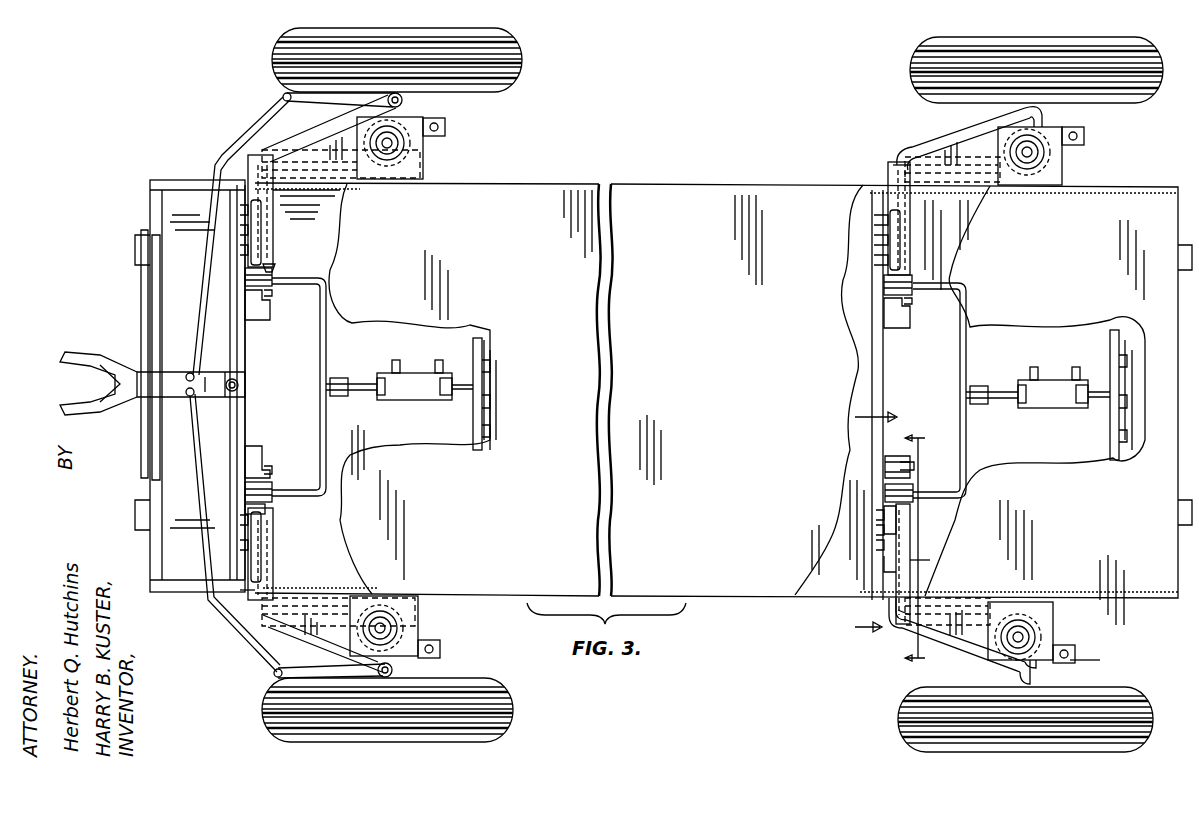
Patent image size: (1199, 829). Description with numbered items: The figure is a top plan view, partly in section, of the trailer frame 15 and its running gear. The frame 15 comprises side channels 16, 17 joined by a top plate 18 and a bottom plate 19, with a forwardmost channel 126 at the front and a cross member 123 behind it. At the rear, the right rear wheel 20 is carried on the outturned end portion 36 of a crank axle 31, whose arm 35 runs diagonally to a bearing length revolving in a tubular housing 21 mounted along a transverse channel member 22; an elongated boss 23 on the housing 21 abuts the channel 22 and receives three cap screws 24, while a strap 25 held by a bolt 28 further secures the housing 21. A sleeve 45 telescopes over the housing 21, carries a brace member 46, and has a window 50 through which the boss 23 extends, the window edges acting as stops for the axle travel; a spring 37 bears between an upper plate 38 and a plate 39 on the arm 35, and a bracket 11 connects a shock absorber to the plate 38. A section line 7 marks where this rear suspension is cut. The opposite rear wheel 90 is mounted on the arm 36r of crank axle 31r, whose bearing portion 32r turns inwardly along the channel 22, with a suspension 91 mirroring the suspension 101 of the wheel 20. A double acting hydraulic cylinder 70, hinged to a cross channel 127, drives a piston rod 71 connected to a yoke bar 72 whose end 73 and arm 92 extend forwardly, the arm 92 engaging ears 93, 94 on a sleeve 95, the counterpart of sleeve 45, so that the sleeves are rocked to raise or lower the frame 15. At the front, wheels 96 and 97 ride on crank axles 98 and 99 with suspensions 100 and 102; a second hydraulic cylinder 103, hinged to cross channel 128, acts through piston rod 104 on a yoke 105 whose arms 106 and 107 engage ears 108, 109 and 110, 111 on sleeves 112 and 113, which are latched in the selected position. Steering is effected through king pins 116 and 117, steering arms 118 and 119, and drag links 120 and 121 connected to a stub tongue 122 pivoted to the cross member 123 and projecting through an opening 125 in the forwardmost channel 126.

The section line 7 is at (924, 548).
The bracket 11 is at (975, 537).
The frame 15 is at (560, 212).
The side channel 16 is at (160, 190).
The side channel 17 is at (172, 580).
The top plate 18 is at (707, 210).
The bottom plate 19 is at (345, 565).
The right rear wheel 20 is at (900, 727).
The tubular housing 21 is at (882, 545).
The transverse channel member 22 is at (882, 368).
The elongated boss 23 is at (884, 520).
The cap screws 24 is at (882, 563).
The strap 25 is at (914, 466).
The bolt 28 is at (885, 462).
The axle 31 is at (890, 630).
The crank axle 31r is at (900, 150).
The bearing portion 32r is at (893, 158).
The arm 35 is at (965, 655).
The outturned end portion 36 is at (1036, 683).
The arm 36r is at (1045, 114).
The spring 37 is at (1032, 637).
The upper member 38 is at (1050, 618).
The plate 39 is at (905, 625).
The sleeve 45 is at (908, 540).
The brace member 46 is at (948, 600).
The window 50 is at (912, 560).
The hydraulic control cylinder 70 is at (1040, 393).
The piston rod 71 is at (995, 392).
The yoke bar 72 is at (966, 442).
The yoke end 73 is at (922, 498).
The right hand wheel 90 is at (915, 52).
The spring suspension 91 is at (1055, 170).
The arm 92 is at (935, 287).
The ear 93 is at (912, 278).
The ear 94 is at (912, 302).
The sleeve 95 is at (905, 214).
The front wheel 96 is at (510, 720).
The front wheel 97 is at (522, 62).
The crank axle 98 is at (280, 638).
The crank axle 99 is at (330, 130).
The spring suspension 100 is at (405, 615).
The spring suspension 101 is at (1020, 616).
The suspension 102 is at (410, 160).
The hydraulic cylinder 103 is at (408, 383).
The piston rod 104 is at (355, 385).
The yoke 105 is at (323, 375).
The arm 106 is at (282, 490).
The arm 107 is at (280, 282).
The ear 108 is at (267, 507).
The ear 109 is at (290, 466).
The ear 110 is at (272, 293).
The ear 111 is at (274, 266).
The sleeve 112 is at (265, 555).
The sleeve 113 is at (260, 205).
The king pin 116 is at (393, 671).
The king pin 117 is at (403, 102).
The steering arm 118 is at (300, 670).
The steering arm 119 is at (282, 94).
The drag link 120 is at (240, 640).
The drag link 121 is at (235, 142).
The stub tongue 122 is at (142, 372).
The cross member 123 is at (240, 356).
The opening 125 is at (143, 437).
The forwardmost channel 126 is at (156, 445).
The cross channel 127 is at (1114, 450).
The cross channel 128 is at (477, 447).